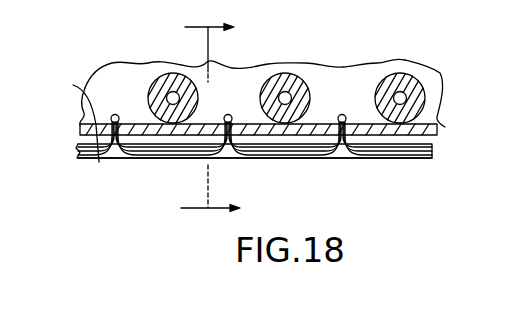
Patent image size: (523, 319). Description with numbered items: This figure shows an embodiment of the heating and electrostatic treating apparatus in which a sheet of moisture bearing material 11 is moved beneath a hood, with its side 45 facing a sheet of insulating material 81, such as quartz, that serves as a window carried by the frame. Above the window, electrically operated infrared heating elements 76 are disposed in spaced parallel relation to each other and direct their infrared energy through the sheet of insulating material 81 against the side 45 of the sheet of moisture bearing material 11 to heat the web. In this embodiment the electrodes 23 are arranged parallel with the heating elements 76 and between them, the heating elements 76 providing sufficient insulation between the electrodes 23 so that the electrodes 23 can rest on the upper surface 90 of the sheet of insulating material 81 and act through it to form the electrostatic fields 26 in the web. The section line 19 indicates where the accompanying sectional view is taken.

The sheet of moisture bearing material 11 is at (99, 162).
The section line 19- 19 is at (232, 118).
The electrodes 23 is at (345, 116).
The electrostatic fields 26 is at (390, 160).
The side of sheet of moisture bearing material 45 is at (69, 116).
The infrared heating elements 76 is at (300, 63).
The sheet of insulating material 81 is at (438, 128).
The upper surface of sheet of insulating material 90 is at (322, 125).